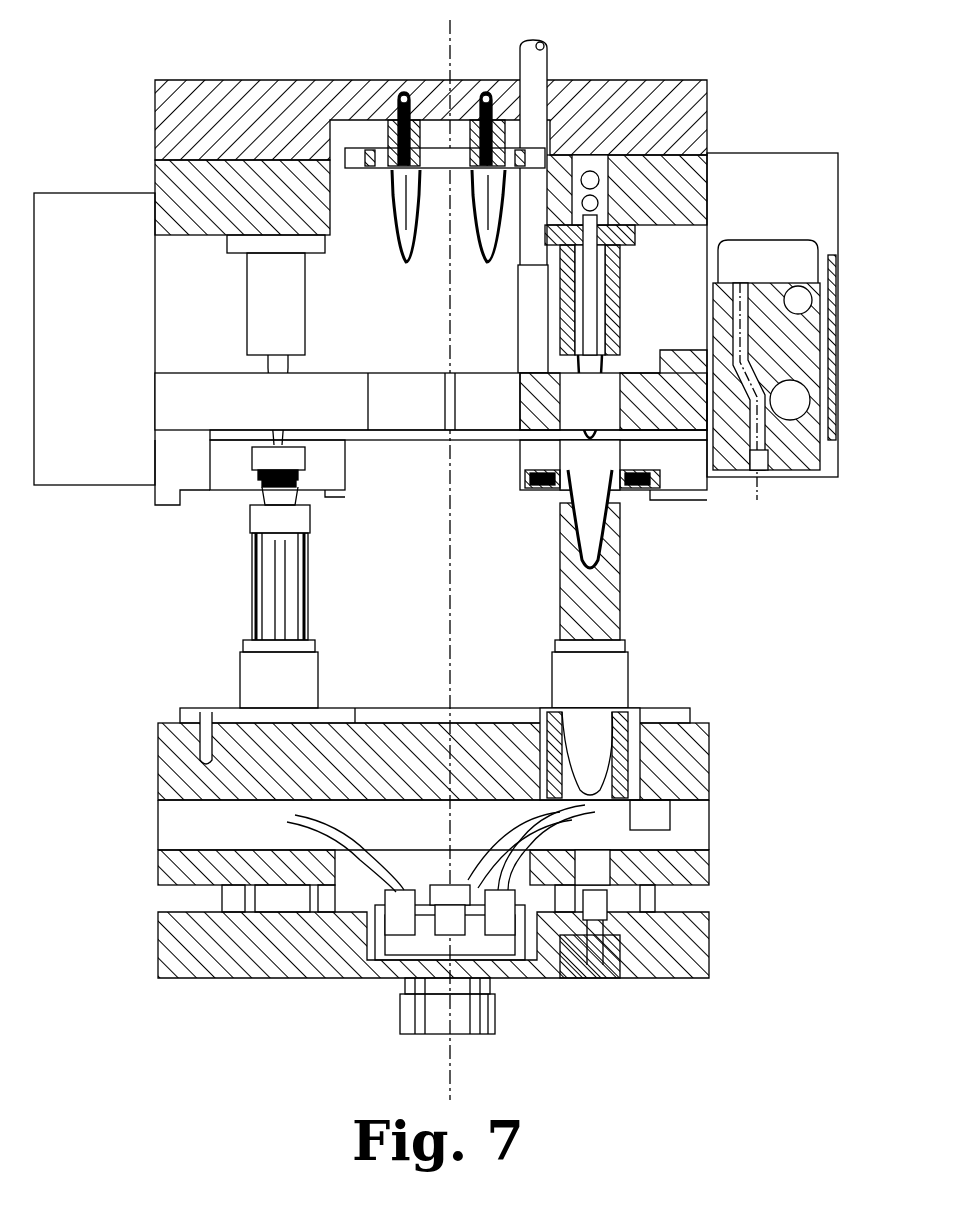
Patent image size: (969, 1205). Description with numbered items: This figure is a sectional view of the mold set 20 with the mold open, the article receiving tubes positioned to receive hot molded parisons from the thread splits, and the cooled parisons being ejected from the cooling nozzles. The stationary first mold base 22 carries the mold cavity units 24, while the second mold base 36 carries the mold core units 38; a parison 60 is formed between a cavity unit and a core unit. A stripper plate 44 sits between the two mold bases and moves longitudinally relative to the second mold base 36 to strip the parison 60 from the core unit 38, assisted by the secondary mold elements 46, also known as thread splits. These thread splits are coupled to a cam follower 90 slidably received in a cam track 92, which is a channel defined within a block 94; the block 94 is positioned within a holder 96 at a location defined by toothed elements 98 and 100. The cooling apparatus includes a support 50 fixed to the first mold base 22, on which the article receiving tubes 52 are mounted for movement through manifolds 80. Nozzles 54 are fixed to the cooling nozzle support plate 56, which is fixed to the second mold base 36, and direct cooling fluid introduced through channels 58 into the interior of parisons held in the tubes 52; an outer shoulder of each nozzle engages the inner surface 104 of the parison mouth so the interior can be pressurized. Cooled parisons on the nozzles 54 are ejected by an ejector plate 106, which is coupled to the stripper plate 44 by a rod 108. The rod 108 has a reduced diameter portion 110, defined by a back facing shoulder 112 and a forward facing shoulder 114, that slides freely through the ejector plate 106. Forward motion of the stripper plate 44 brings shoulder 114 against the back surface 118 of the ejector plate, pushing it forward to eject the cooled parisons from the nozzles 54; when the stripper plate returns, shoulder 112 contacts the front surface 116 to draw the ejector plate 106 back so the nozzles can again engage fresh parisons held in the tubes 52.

The mold set 20 is at (688, 52).
The first mold base 22 is at (170, 722).
The mold cavity unit 24 is at (330, 708).
The second mold base 36 is at (172, 192).
The mold core unit 38 is at (290, 372).
The stripper plate 44 is at (348, 415).
The secondary mold element 46 is at (312, 492).
The support 50 is at (420, 718).
The article receiving tube 52 is at (290, 600).
The nozzle 54 is at (414, 120).
The cooling nozzle support plate 56 is at (298, 105).
The channel 58 is at (400, 98).
The parison 60 is at (398, 265).
The manifold 80 is at (300, 680).
The cam follower 90 is at (760, 470).
The cam track 92 is at (782, 445).
The block 94 is at (750, 258).
The holder 96 is at (792, 165).
The toothed element 98 is at (795, 290).
The toothed element 100 is at (836, 412).
The inner surface 104 is at (640, 455).
The ejector plate 106 is at (355, 170).
The rod 108 is at (546, 54).
The reduced diameter portion 110 is at (688, 190).
The back facing shoulder 112 is at (522, 262).
The forward facing shoulder 114 is at (560, 185).
The front surface 116 is at (440, 178).
The back surface 118 is at (451, 138).